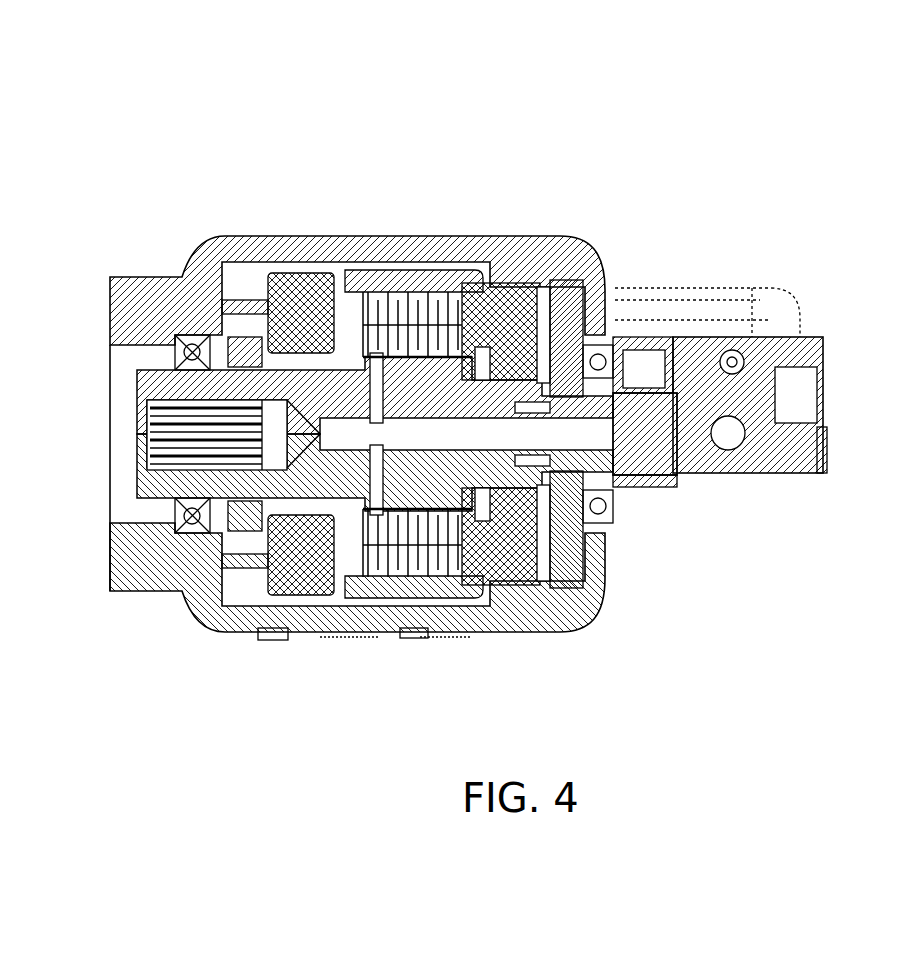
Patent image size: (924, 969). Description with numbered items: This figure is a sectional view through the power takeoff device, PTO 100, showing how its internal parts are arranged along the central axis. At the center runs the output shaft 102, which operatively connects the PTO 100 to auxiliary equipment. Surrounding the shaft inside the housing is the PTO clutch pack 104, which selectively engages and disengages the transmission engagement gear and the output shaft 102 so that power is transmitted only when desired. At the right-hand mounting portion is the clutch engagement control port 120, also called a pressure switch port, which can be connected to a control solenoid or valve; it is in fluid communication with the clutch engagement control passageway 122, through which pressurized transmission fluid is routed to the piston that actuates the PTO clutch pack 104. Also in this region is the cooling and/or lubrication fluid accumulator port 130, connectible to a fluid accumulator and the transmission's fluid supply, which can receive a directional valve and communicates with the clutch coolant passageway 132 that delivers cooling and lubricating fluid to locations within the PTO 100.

The power takeoff device 100 is at (228, 76).
The output shaft 102 is at (147, 457).
The PTO clutch pack 104 is at (410, 272).
The clutch engagement control port 120 is at (780, 352).
The clutch engagement control passageway 122 is at (653, 338).
The cooling and/or lubrication fluid accumulator port 130 is at (740, 452).
The clutch coolant passageway 132 is at (682, 470).